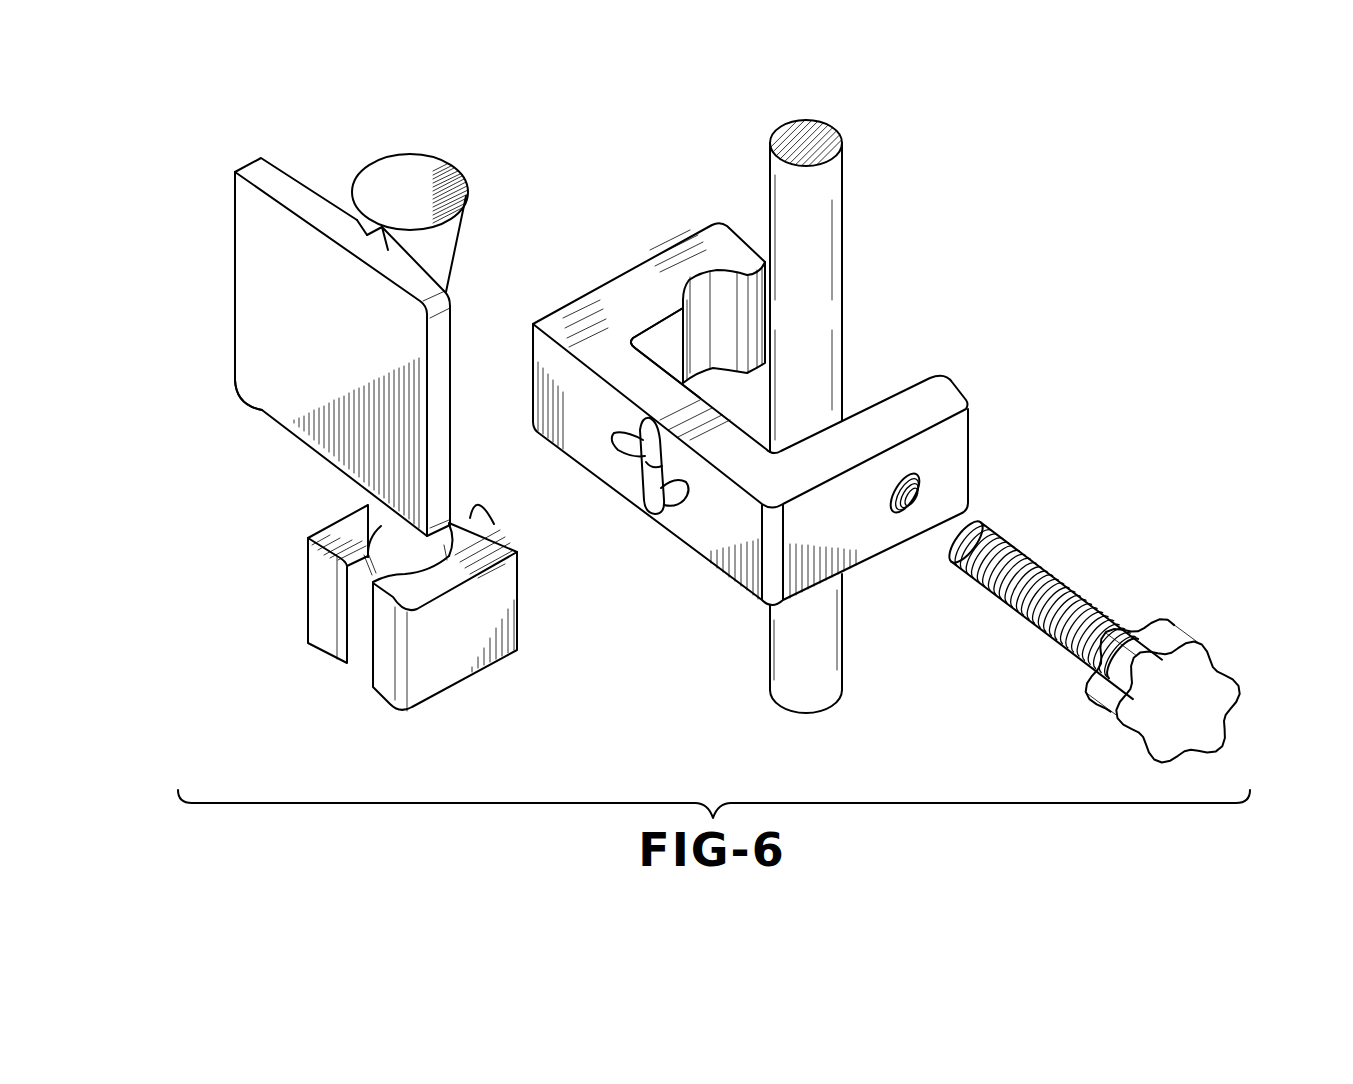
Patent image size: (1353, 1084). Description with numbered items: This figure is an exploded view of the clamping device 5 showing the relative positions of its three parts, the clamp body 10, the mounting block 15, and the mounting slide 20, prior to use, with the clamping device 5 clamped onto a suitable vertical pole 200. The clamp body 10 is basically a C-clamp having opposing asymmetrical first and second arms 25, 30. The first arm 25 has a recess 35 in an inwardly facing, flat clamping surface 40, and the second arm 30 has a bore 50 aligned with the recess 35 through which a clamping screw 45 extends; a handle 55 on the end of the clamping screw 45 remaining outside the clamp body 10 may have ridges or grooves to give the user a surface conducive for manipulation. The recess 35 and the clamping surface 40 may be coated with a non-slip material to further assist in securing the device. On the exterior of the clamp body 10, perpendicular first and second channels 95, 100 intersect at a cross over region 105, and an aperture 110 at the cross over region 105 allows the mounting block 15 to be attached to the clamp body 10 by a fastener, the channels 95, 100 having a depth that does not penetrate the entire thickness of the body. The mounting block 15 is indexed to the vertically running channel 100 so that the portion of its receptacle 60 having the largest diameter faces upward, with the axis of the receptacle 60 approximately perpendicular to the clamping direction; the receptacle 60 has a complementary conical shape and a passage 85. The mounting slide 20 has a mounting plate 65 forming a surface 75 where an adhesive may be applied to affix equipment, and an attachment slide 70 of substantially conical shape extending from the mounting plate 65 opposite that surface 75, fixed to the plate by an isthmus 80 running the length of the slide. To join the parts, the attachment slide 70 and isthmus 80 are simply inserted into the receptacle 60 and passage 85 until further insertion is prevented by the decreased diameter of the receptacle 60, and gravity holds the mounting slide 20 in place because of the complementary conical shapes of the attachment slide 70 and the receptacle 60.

The clamping device 5 is at (1110, 247).
The clamp body 10 is at (795, 378).
The mounting block 15 is at (414, 608).
The mounting slide 20 is at (303, 313).
The first arm 25 is at (638, 285).
The second arm 30 is at (883, 453).
The recess 35 is at (705, 290).
The clamping surface 40 is at (657, 338).
The clamping screw 45 is at (1050, 567).
The bore 50 is at (905, 507).
The handle 55 is at (1222, 720).
The receptacle 60 is at (393, 548).
The mounting plate 65 is at (270, 402).
The attachment slide 70 is at (415, 178).
The surface 75 is at (304, 355).
The isthmus 80 is at (355, 220).
The passage 85 is at (353, 626).
The first channel 95 is at (677, 493).
The second channel 100 is at (657, 500).
The cross over region 105 is at (657, 468).
The aperture 110 is at (657, 454).
The vertical pole 200 is at (845, 193).